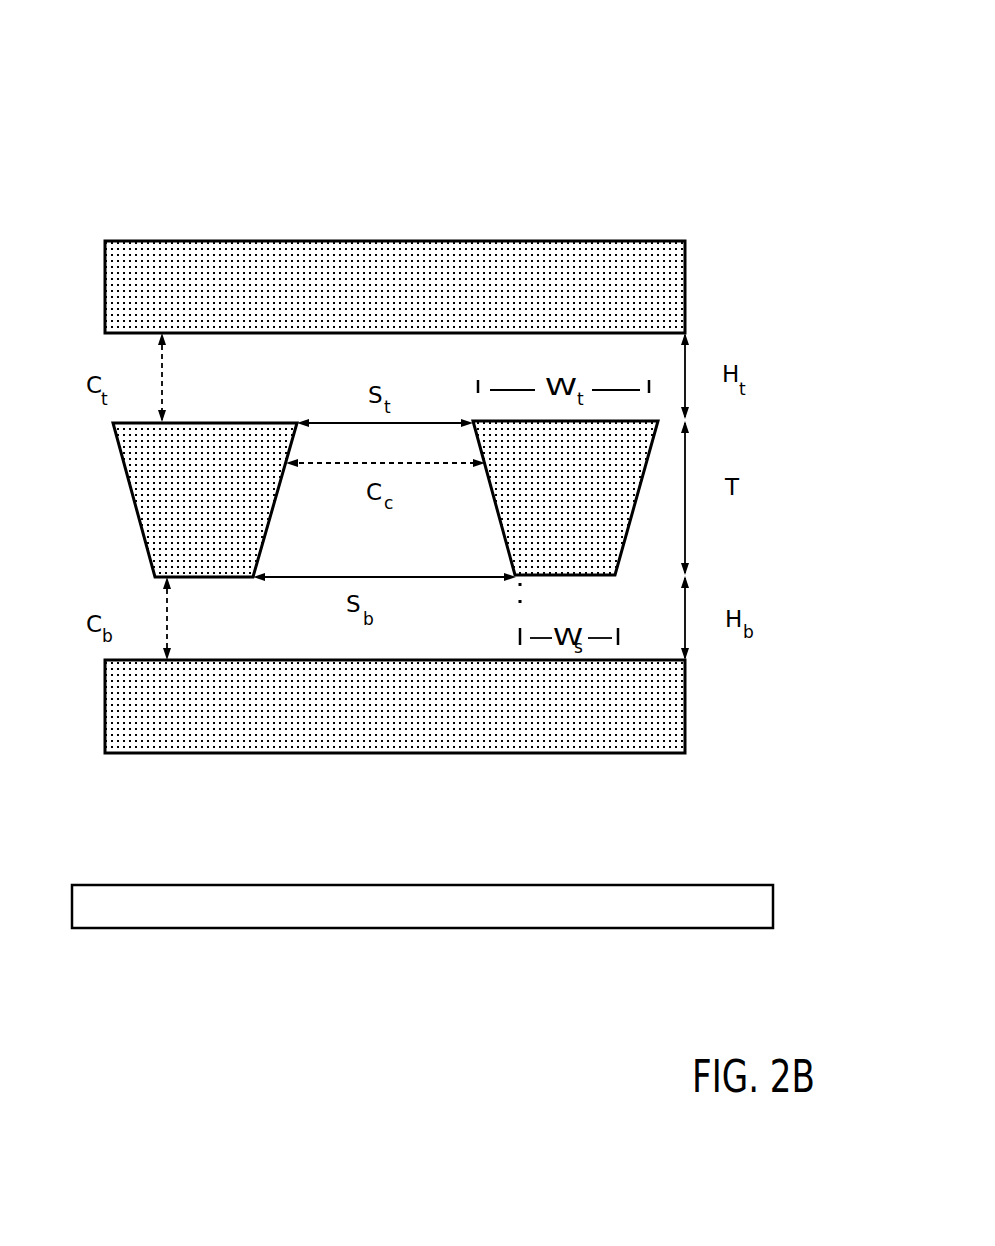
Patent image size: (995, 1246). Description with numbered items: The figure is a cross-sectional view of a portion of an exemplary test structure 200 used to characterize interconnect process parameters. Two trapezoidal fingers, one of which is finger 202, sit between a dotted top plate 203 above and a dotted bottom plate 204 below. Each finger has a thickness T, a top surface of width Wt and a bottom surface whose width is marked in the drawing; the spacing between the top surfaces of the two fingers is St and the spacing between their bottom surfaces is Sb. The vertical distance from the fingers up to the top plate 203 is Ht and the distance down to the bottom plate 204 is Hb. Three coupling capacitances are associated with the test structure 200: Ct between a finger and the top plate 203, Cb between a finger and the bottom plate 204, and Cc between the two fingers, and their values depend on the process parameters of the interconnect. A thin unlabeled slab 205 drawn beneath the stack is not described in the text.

The test structure 200 is at (489, 88).
The finger 202 is at (567, 577).
The top plate 203 is at (463, 241).
The bottom plate 204 is at (445, 748).
The substrate 205 is at (713, 928).